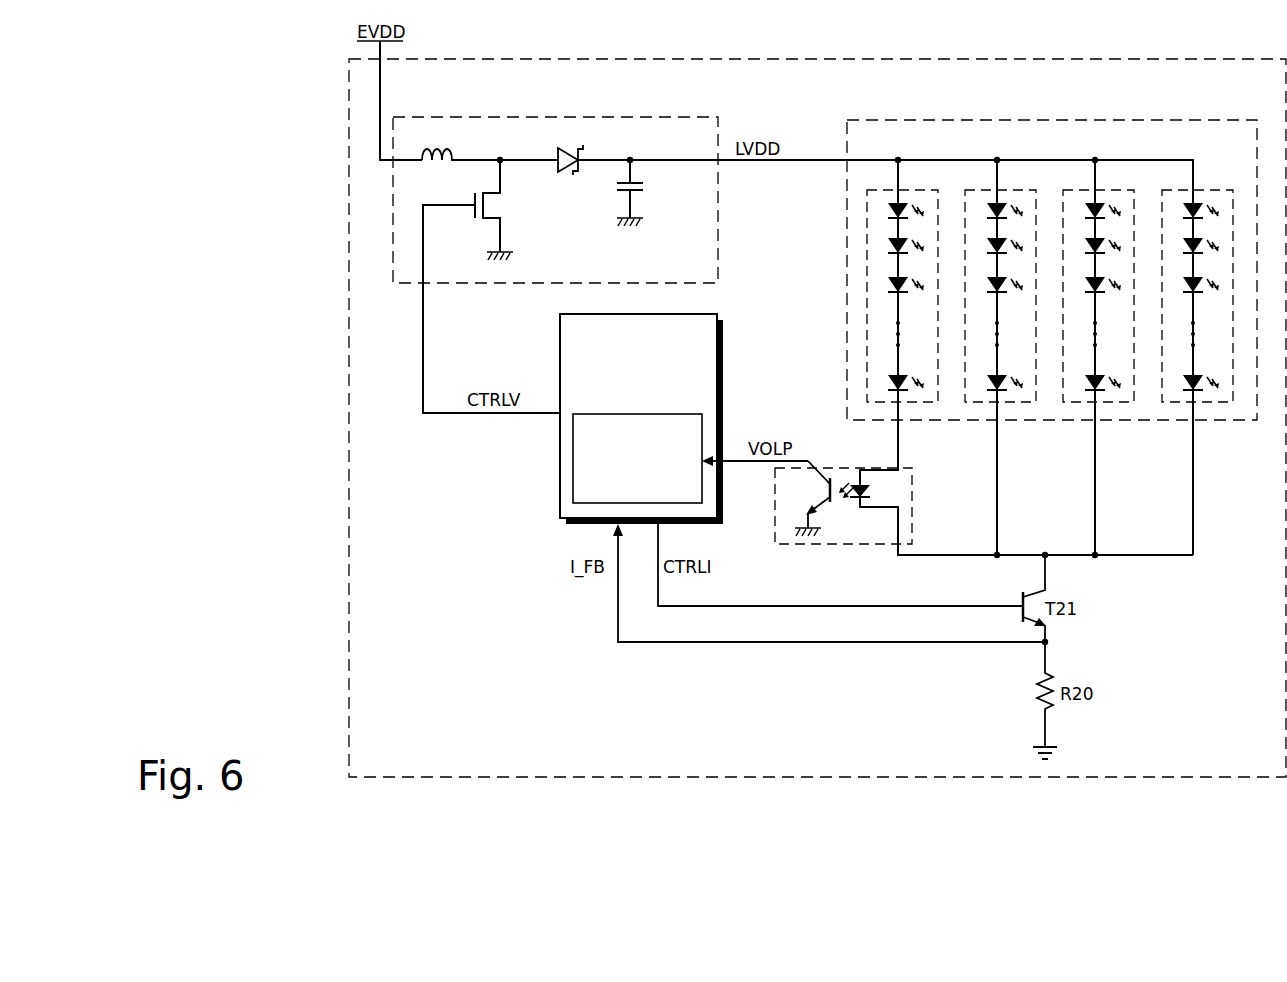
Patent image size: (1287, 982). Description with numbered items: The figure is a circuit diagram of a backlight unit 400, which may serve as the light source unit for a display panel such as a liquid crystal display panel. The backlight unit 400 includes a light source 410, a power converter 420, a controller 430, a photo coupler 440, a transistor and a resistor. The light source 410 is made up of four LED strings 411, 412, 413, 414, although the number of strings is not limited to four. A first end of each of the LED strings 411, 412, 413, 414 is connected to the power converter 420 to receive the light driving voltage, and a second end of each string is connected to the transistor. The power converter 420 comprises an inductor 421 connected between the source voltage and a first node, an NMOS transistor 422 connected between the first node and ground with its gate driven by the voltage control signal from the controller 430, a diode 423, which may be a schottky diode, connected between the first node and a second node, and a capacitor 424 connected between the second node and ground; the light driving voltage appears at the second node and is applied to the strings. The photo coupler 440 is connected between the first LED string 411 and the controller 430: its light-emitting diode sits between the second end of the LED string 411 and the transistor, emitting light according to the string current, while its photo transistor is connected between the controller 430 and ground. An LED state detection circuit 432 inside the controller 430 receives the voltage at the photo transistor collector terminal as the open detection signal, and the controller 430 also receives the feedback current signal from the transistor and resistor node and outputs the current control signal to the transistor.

The backlight unit 400 is at (349, 456).
The light source 410 is at (1160, 120).
The LED string 411 is at (908, 190).
The LED string 412 is at (1008, 190).
The LED string 413 is at (1106, 190).
The LED string 414 is at (1218, 190).
The power converter 420 is at (660, 117).
The inductor 421 is at (432, 147).
The NMOS transistor 422 is at (503, 206).
The diode 423 is at (568, 148).
The capacitor 424 is at (645, 187).
The controller 430 is at (560, 461).
The LED state detection circuit 432 is at (668, 414).
The photo coupler 440 is at (836, 468).